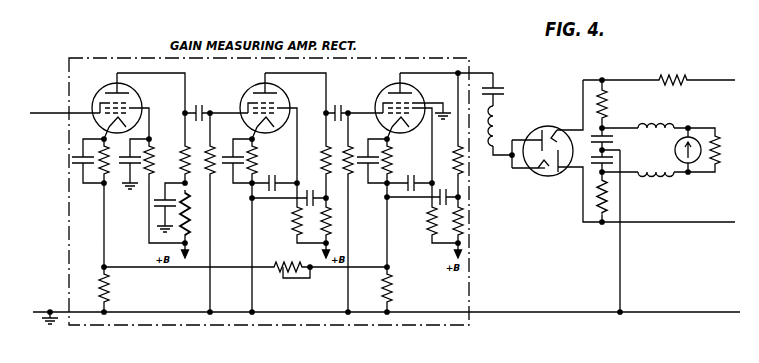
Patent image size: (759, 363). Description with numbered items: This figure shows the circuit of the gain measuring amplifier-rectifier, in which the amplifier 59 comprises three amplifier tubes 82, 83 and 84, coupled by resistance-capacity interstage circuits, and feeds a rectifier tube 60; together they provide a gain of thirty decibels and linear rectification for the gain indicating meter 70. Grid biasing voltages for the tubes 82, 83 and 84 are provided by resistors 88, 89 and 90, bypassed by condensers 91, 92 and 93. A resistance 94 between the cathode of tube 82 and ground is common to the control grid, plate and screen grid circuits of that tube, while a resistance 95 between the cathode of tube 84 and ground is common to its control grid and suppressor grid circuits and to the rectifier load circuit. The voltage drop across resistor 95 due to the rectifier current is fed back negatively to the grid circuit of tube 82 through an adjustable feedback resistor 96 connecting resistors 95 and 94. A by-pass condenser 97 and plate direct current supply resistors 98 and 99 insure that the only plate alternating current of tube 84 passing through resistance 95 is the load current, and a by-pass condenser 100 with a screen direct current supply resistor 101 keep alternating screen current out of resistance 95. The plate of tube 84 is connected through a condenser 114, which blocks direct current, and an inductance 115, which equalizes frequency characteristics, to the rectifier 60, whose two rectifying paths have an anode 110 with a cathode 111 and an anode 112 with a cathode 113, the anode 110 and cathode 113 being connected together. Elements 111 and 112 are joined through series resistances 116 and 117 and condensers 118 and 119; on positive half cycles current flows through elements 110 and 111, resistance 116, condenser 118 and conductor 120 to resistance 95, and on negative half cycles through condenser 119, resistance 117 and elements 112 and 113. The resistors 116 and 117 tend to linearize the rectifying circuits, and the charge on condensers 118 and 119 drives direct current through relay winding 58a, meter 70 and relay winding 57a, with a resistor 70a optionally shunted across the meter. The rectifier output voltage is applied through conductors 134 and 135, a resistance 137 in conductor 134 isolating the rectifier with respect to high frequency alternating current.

The amplifier tube 82 is at (108, 88).
The amplifier tube 83 is at (254, 86).
The amplifier tube 84 is at (394, 87).
The condenser 91 is at (68, 160).
The resistor 88 is at (106, 182).
The resistor 89 is at (259, 162).
The resistor 90 is at (396, 160).
The by-pass condenser 100 is at (413, 178).
The condenser 92 is at (216, 185).
The condenser 93 is at (353, 185).
The screen direct current supply resistor 101 is at (426, 212).
The adjustable feedback resistor 96 is at (283, 262).
The resistance 94 is at (114, 299).
The resistance 95 is at (394, 299).
The plate direct current supply resistor 99 is at (462, 168).
The by-pass condenser 97 is at (462, 188).
The plate direct current supply resistor 98 is at (462, 224).
The condenser 114 is at (500, 92).
The inductance 115 is at (498, 125).
The anode 110 is at (541, 128).
The cathode 111 is at (560, 133).
The anode 112 is at (563, 172).
The cathode 113 is at (540, 172).
The rectifier tube 60 is at (551, 177).
The resistance 116 is at (607, 103).
The condenser 118 is at (612, 135).
The condenser 119 is at (613, 160).
The resistance 117 is at (604, 202).
The relay winding 58a is at (660, 123).
The relay winding 57a is at (660, 178).
The gain indicating meter 70 is at (698, 130).
The resistor 70a is at (720, 158).
The resistance 137 is at (677, 74).
The conductor 134 is at (727, 68).
The conductor 135 is at (700, 224).
The conductor 120 is at (619, 270).
The amplifier-rectifier circuit 59 is at (470, 320).